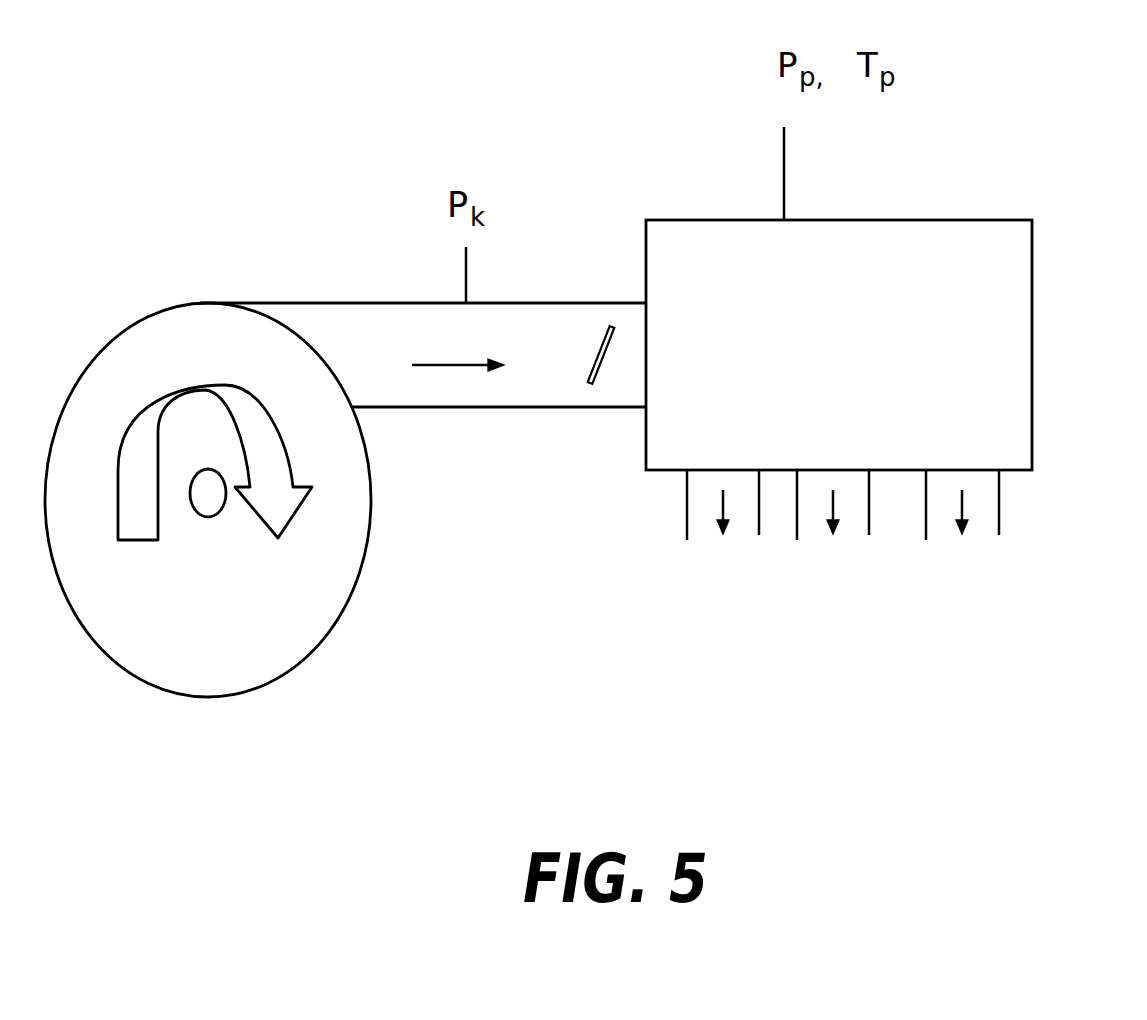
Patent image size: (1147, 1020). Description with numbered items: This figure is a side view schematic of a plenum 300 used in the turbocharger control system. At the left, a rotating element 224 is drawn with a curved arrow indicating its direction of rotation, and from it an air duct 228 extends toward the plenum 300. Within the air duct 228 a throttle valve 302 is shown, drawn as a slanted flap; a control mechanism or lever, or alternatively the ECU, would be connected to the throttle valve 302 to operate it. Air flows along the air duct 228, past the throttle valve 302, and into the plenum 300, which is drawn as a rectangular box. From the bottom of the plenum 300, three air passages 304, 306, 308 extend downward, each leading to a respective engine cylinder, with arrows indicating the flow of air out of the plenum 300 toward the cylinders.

The rotating wheel / roller 224 is at (208, 698).
The air duct 228 is at (317, 303).
The plenum 300 is at (1032, 415).
The throttle valve 302 is at (597, 337).
The air passage 304 is at (687, 540).
The air passage 306 is at (797, 540).
The air passage 308 is at (926, 540).